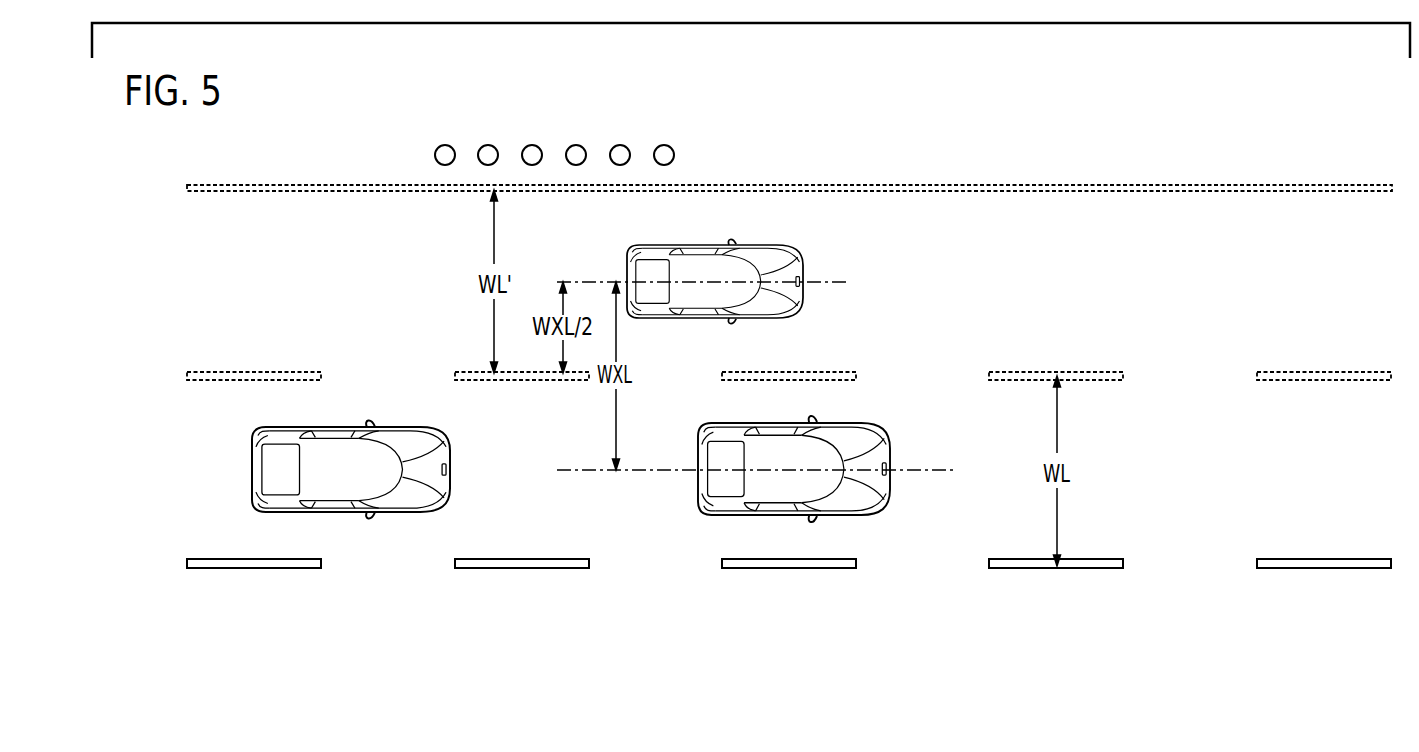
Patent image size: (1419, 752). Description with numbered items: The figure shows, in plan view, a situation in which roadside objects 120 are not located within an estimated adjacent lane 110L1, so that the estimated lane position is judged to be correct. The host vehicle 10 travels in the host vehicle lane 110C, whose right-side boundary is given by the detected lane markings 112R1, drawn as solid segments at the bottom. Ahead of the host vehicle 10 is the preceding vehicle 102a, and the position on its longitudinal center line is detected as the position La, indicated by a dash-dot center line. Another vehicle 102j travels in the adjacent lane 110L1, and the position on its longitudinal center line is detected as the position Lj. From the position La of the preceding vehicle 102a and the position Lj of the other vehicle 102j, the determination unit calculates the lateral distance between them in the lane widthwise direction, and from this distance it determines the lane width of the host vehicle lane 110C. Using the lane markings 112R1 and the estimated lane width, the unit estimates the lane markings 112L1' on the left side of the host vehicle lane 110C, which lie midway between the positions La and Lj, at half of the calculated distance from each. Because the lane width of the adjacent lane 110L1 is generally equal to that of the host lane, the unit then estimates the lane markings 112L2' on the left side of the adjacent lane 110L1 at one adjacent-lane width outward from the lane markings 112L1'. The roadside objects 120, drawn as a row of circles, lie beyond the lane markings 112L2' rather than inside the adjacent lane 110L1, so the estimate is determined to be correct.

The host vehicle 10 is at (430, 441).
The other vehicle 102j is at (660, 250).
The preceding vehicle 102a is at (706, 512).
The adjacent lane 110L1 is at (200, 249).
The host vehicle lane 110C is at (200, 429).
The lane markings on the left side of the adjacent lane 112L2' is at (744, 182).
The lane markings on the left side of the host vehicle lane 112L1' is at (744, 372).
The lane markings on the right side of the host vehicle lane 112R1 is at (187, 562).
The roadside objects 120 is at (663, 146).
The position of the other vehicle Lj is at (579, 278).
The position of the preceding vehicle La is at (634, 474).